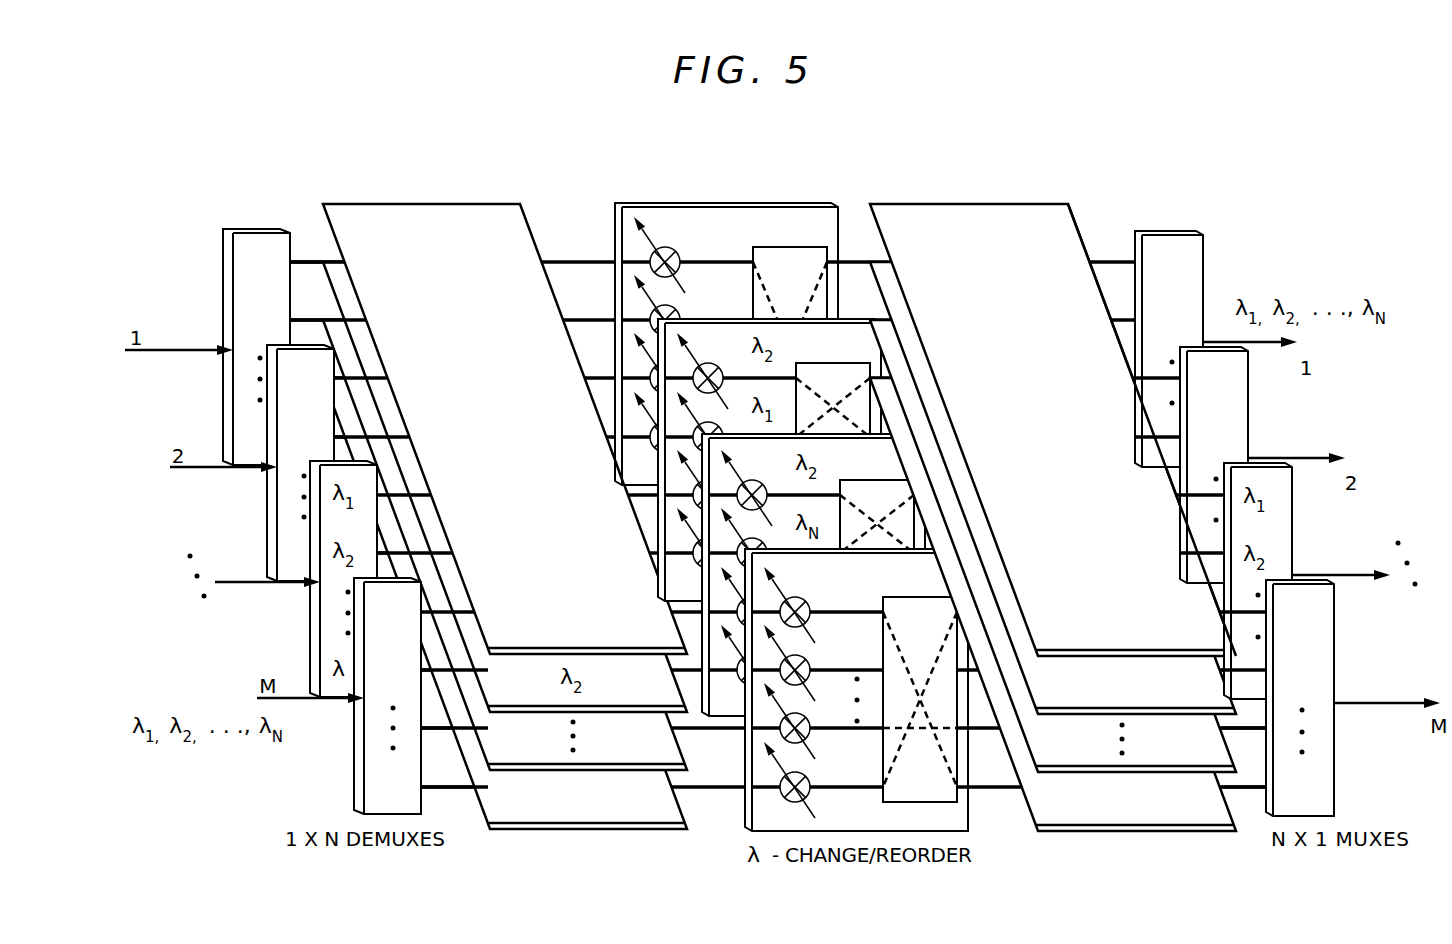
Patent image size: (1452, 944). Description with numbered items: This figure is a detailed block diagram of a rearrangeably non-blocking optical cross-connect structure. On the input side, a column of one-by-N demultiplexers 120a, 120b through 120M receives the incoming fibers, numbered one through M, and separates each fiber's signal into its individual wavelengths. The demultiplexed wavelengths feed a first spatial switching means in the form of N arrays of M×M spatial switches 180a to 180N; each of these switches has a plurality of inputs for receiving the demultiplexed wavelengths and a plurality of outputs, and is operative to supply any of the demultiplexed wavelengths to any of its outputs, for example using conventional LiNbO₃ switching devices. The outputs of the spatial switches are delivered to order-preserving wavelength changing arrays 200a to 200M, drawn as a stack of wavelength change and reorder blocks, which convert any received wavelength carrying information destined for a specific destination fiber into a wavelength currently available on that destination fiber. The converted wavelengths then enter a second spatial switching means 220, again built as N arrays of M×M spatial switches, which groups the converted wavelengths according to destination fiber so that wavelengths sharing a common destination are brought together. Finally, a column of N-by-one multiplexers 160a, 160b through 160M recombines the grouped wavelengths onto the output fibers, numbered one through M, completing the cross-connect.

The 1xN demultiplexer (first input) 120a is at (233, 262).
The 1xN demultiplexer (second input) 120b is at (270, 499).
The 1xN demultiplexer (M-th input) 120M is at (354, 796).
The M×M spatial switch array 180a is at (455, 203).
The M×M spatial switch array 180N is at (547, 826).
The order-preserving wavelength changing array 200a is at (752, 203).
The order-preserving wavelength changing array 200M is at (966, 830).
The second spatial switching means 220 is at (1003, 203).
The Nx1 multiplexer (first output) 160a is at (1198, 231).
The Nx1 multiplexer (second output) 160b is at (1250, 416).
The Nx1 multiplexer (M-th output) 160M is at (1335, 640).